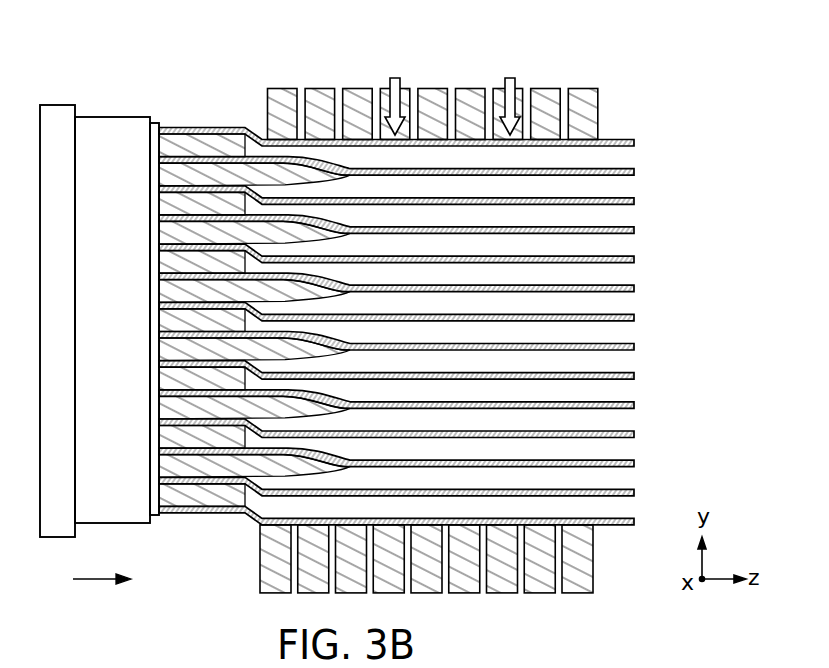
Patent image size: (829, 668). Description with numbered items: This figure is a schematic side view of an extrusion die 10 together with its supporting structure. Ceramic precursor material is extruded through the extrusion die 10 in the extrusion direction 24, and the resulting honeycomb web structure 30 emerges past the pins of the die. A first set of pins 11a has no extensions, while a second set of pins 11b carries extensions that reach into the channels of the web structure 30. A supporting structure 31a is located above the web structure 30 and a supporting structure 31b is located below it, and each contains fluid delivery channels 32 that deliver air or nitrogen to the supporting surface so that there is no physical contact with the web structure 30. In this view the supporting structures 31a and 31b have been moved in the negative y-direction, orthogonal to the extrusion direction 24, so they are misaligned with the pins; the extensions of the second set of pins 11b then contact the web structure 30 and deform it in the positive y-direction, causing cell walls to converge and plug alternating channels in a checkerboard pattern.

The extrusion die 10 is at (115, 273).
The first set of pins 11a is at (214, 143).
The second set of pins 11b is at (293, 170).
The extrusion direction 24 is at (100, 579).
The web structure 30 is at (428, 288).
The supporting structure above the web structure 31a is at (597, 117).
The supporting structure below the web structure 31b is at (593, 556).
The fluid delivery channels 32 is at (463, 343).